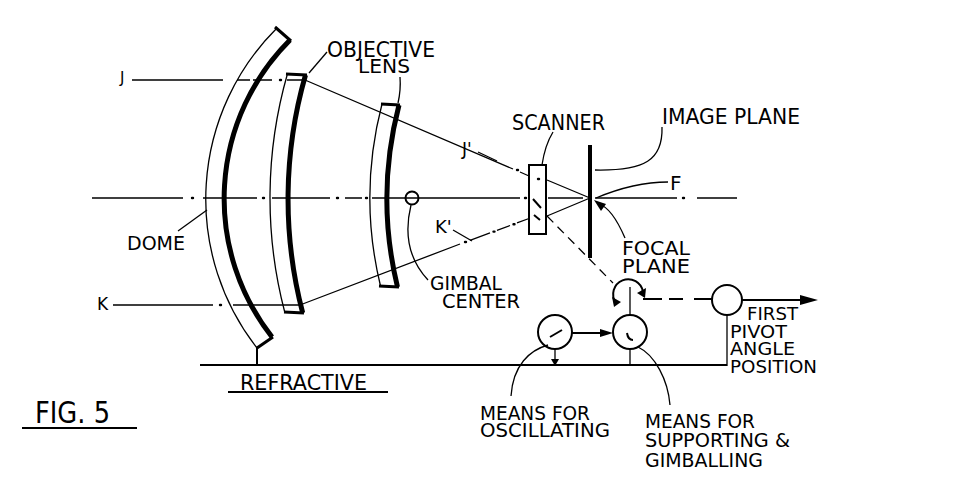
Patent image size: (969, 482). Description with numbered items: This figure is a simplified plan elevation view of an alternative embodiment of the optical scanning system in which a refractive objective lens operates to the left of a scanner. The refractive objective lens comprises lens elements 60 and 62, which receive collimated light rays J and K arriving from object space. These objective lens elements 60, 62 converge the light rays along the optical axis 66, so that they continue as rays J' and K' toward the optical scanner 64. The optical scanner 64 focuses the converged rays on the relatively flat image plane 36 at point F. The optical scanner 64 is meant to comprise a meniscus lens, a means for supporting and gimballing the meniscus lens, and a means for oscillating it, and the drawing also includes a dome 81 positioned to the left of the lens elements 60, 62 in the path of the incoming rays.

The dome 81 is at (256, 62).
The lens element 60 is at (292, 97).
The lens element 62 is at (402, 106).
The optical scanner 64 is at (529, 165).
The image plane 36 is at (587, 152).
The optical axis 66 is at (176, 195).